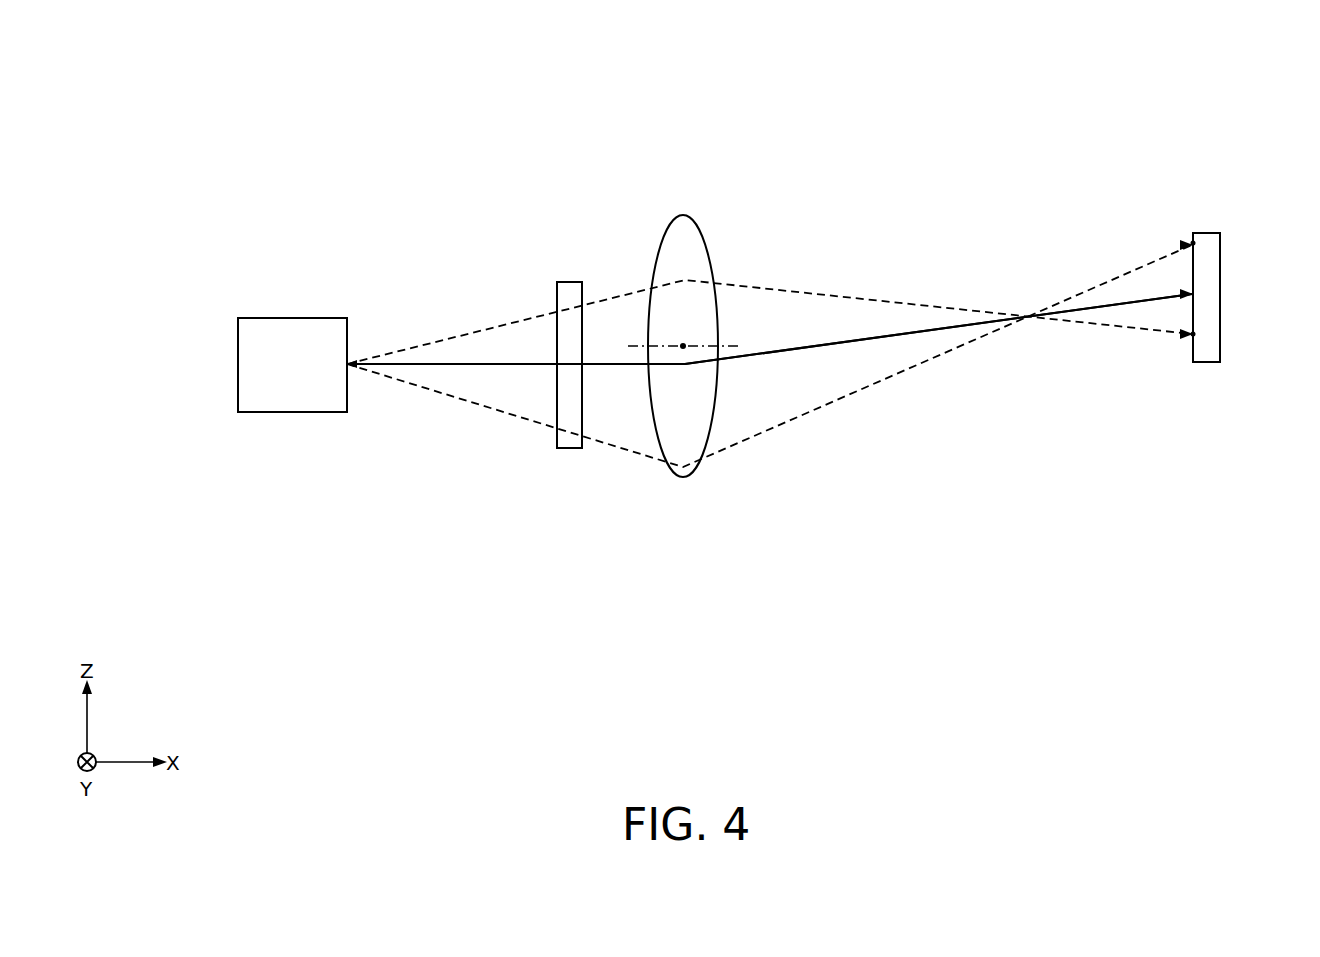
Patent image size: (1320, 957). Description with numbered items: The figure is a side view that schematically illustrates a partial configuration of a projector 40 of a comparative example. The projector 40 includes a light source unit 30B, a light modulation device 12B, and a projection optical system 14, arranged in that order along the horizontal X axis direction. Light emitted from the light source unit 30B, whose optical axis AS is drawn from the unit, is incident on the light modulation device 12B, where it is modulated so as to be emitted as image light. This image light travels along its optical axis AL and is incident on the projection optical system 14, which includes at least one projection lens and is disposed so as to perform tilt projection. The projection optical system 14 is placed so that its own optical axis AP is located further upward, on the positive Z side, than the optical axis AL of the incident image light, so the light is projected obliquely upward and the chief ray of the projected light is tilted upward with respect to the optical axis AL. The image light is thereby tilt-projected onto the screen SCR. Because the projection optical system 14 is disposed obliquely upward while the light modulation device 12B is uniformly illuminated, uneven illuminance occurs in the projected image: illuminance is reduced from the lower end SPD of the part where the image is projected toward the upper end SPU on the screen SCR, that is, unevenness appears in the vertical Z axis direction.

The projector 40 is at (422, 118).
The light source unit 30B is at (269, 404).
The optical axis of the light source unit AS is at (457, 363).
The optical axis of the incident image light AL is at (622, 367).
The light modulation device 12B is at (568, 292).
The projection optical system 14 is at (686, 228).
The optical axis of the projection optical system AP is at (722, 346).
The screen SCR is at (1210, 280).
The upper end SPU is at (1195, 243).
The lower end SPD is at (1195, 334).